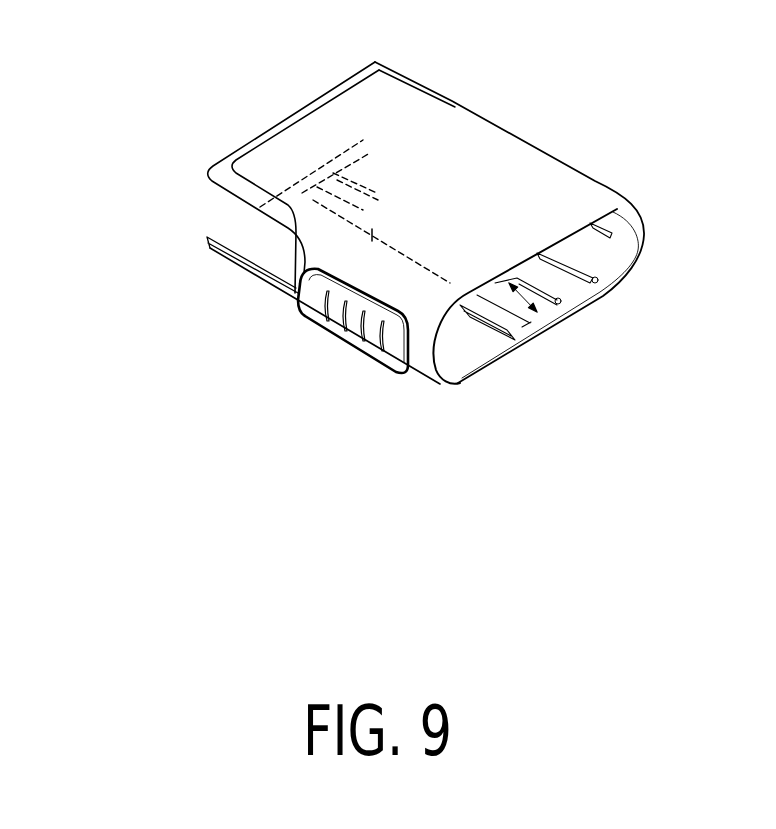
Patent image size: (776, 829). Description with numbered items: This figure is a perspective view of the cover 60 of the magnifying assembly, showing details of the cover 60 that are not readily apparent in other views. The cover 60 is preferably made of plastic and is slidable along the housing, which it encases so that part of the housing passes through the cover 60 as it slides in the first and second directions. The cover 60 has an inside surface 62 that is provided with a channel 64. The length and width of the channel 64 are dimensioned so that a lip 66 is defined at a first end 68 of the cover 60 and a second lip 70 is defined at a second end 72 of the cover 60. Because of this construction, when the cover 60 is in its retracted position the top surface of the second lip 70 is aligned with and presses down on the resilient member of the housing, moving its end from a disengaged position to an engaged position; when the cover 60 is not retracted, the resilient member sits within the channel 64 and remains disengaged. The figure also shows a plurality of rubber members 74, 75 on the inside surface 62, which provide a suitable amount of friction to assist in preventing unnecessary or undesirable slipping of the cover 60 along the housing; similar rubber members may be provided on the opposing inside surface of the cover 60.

The cover 60 is at (453, 90).
The inside surface 62 is at (566, 291).
The channel 64 is at (352, 195).
The lip 66 is at (565, 312).
The first end 68 is at (583, 313).
The second lip 70 is at (297, 188).
The second end 72 is at (347, 150).
The rubber member 74 is at (638, 263).
The rubber member 75 is at (487, 335).